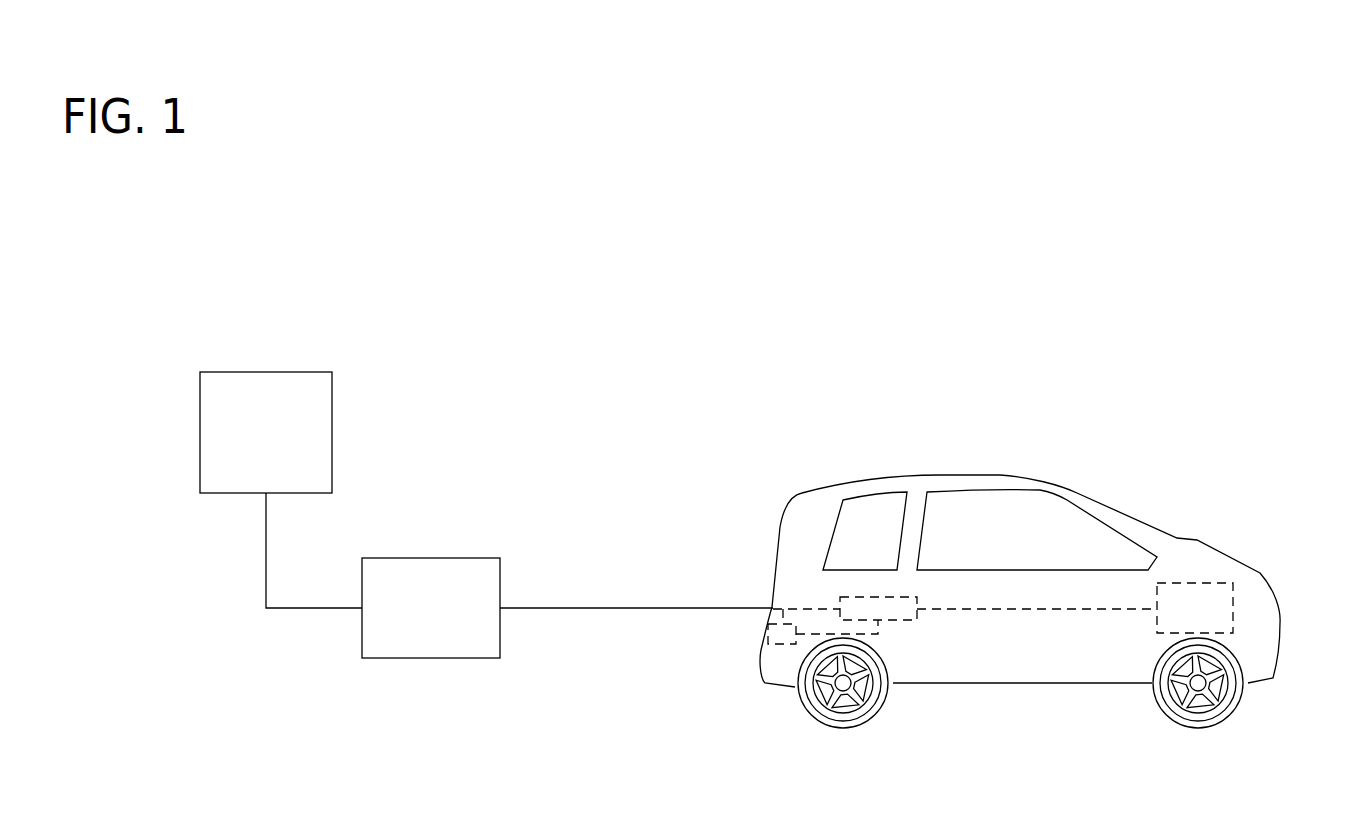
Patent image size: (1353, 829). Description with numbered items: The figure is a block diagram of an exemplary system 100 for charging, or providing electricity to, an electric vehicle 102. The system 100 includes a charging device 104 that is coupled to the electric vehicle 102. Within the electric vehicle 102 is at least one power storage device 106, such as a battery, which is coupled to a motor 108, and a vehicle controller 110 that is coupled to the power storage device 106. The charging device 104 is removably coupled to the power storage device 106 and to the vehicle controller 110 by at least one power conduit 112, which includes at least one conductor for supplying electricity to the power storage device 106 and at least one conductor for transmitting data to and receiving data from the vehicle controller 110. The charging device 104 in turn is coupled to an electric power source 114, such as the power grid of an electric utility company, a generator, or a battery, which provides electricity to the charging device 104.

The system 100 is at (792, 318).
The electric vehicle 102 is at (1017, 408).
The charging device 104 is at (470, 558).
The power storage device 106 is at (910, 620).
The motor 108 is at (1197, 583).
The vehicle controller 110 is at (777, 645).
The power conduit 112 is at (650, 608).
The electric power source 114 is at (297, 372).